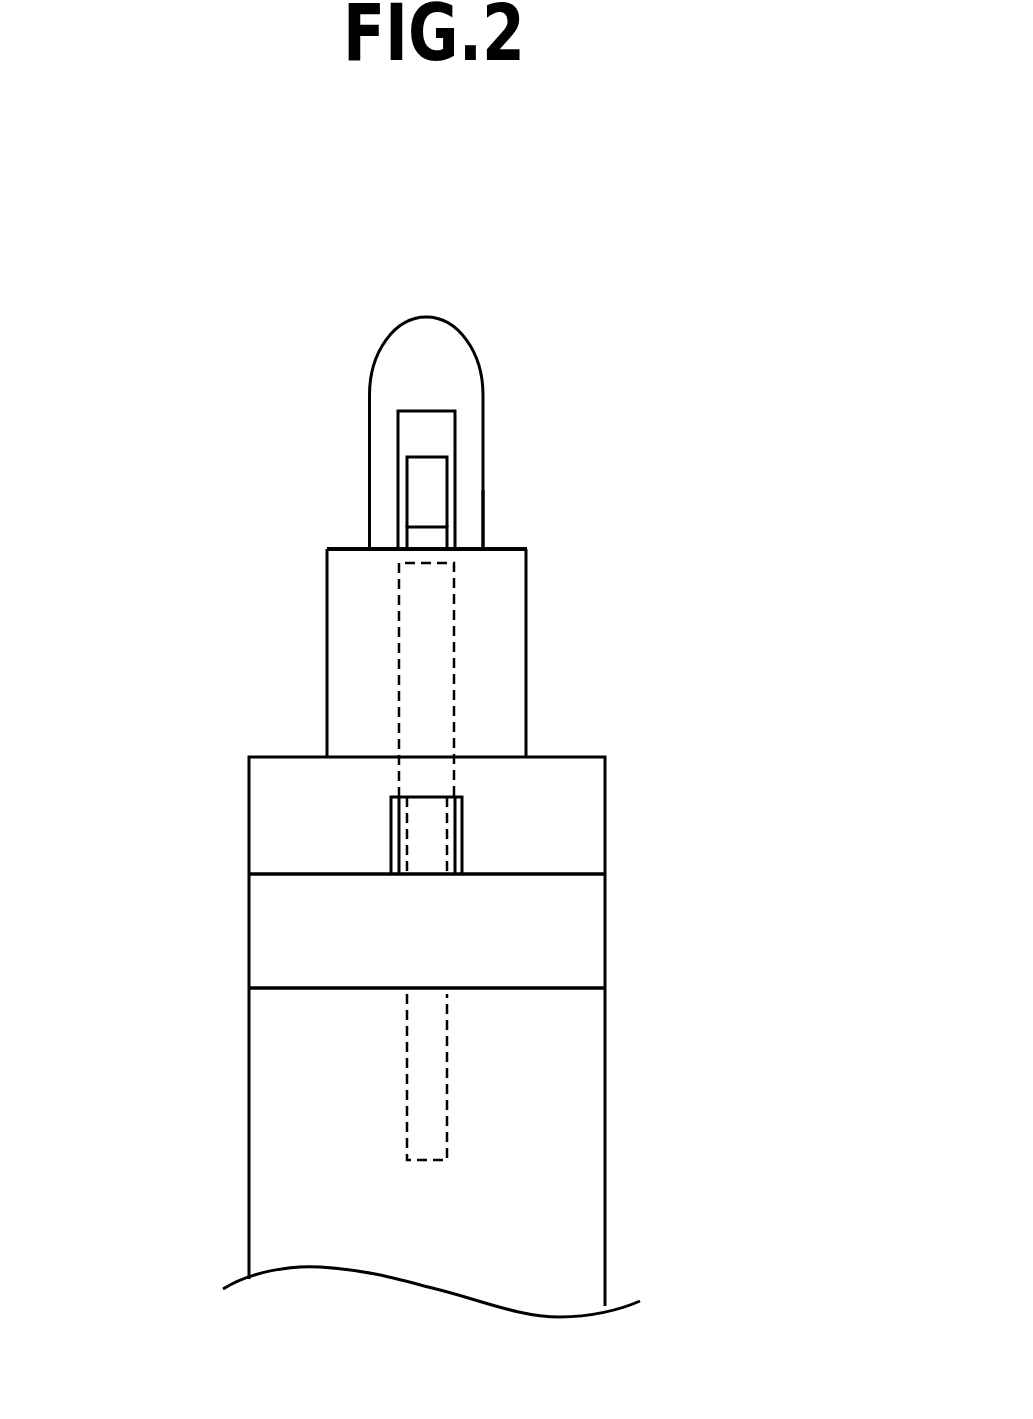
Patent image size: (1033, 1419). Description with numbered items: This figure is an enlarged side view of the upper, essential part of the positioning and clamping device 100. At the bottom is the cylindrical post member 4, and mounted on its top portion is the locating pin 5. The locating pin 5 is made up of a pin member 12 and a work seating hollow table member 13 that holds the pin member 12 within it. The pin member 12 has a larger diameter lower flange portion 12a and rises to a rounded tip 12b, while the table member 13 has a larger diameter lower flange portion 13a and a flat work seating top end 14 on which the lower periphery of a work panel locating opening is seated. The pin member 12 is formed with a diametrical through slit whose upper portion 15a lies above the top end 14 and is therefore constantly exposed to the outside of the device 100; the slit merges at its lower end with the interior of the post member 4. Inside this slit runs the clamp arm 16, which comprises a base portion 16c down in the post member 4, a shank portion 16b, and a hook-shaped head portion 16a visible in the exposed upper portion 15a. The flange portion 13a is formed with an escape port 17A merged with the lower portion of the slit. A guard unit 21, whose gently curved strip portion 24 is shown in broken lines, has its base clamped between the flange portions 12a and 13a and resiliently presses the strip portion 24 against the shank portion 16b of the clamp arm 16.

The positioning and clamping device 100 is at (770, 213).
The pin member 12 is at (492, 390).
The lower flange portion of pin member 12a is at (275, 937).
The insulator tip end 12b is at (430, 337).
The work seating hollow table member 13 is at (320, 634).
The lower flange portion of table member 13a is at (578, 819).
The work seating top end 14 is at (351, 548).
The upper portion of slit 15a is at (417, 432).
The clamp arm 16 is at (396, 1025).
The hook-shaped head portion 16a is at (428, 492).
The shank portion 16b is at (425, 537).
The base portion 16c is at (427, 978).
The escape port 17A is at (404, 834).
The guard unit 21 is at (426, 680).
The strip portion 24 is at (454, 663).
The cylindrical post member 4 is at (275, 1192).
The locating pin 5 is at (494, 521).